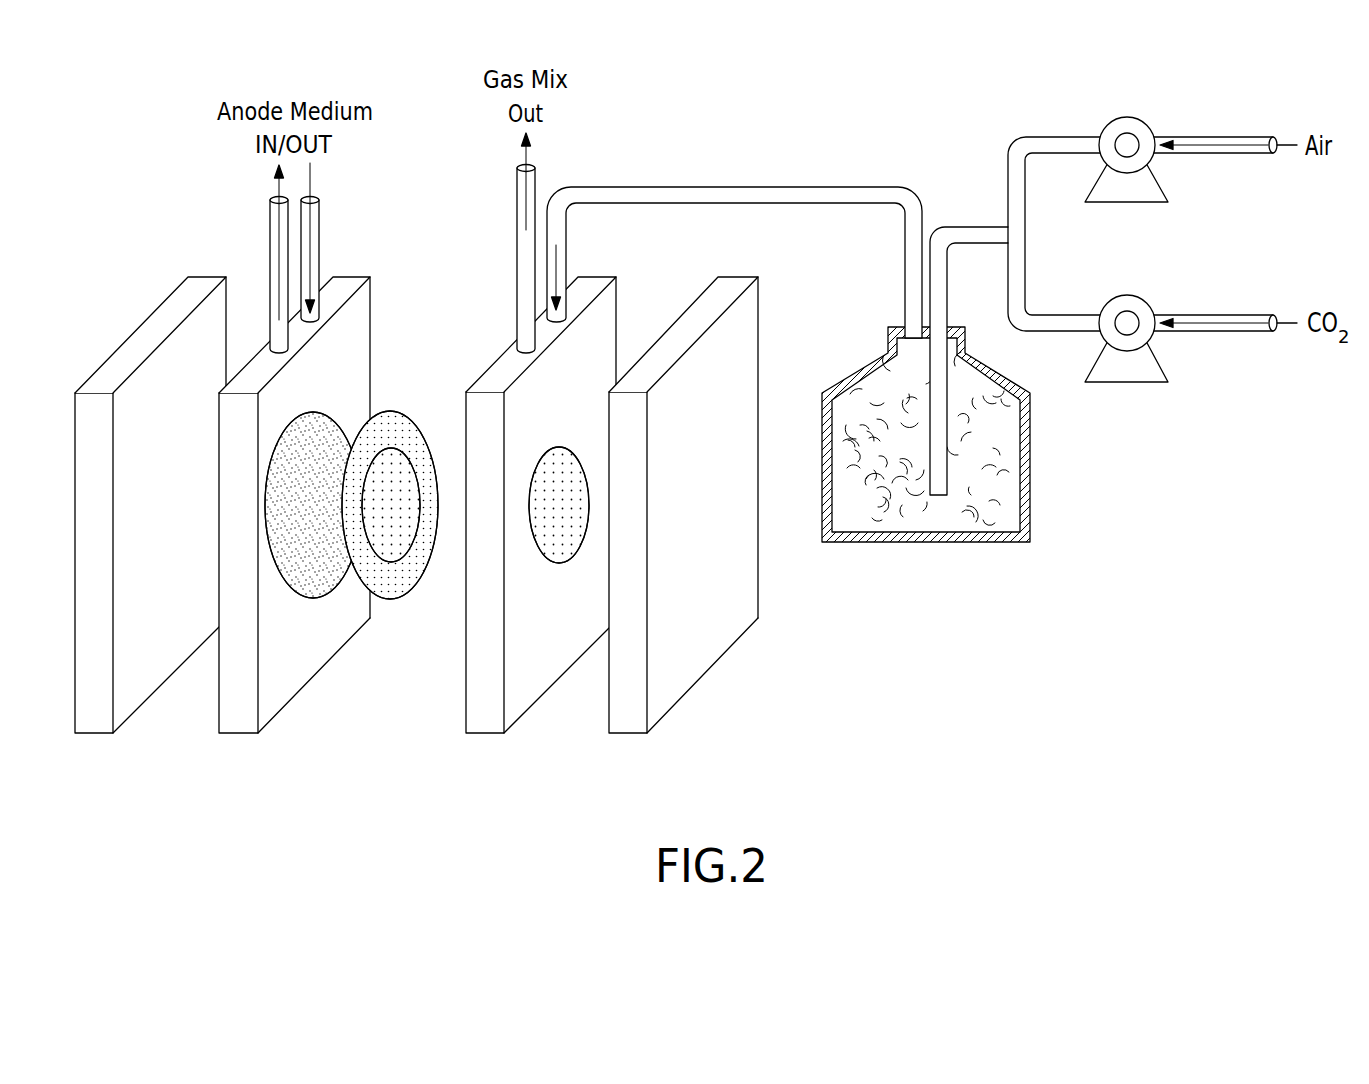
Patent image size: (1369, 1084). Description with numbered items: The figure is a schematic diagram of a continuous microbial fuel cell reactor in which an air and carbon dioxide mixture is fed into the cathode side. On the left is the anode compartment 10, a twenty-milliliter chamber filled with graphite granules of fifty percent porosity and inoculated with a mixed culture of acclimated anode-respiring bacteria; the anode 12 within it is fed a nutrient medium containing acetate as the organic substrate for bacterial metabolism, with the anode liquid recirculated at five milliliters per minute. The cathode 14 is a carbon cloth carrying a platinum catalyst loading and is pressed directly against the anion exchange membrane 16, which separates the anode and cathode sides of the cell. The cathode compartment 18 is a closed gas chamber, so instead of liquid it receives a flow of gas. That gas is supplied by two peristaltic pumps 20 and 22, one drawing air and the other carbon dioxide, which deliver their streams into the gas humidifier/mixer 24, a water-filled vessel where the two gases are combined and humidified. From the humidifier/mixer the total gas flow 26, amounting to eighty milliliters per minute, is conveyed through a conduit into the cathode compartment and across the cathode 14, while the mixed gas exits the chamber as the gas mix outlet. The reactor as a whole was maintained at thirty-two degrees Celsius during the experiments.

The anode compartment 10 is at (308, 513).
The anode 12 is at (184, 744).
The cathode 14 is at (462, 753).
The anion exchange membrane 16 is at (395, 597).
The cathode compartment 18 is at (555, 532).
The peristaltic pump 20 is at (1088, 127).
The peristaltic pump 22 is at (1127, 388).
The gas humidifier/mixer 24 is at (923, 457).
The total gas flow 26 is at (747, 183).